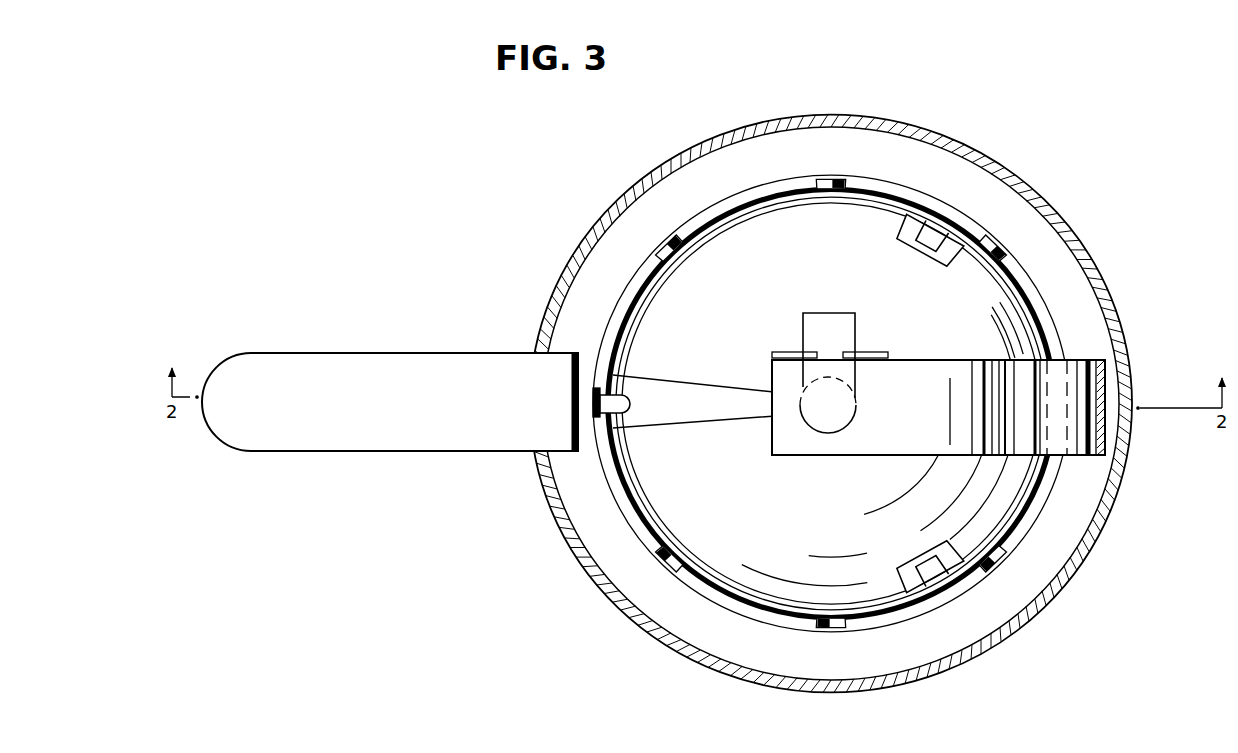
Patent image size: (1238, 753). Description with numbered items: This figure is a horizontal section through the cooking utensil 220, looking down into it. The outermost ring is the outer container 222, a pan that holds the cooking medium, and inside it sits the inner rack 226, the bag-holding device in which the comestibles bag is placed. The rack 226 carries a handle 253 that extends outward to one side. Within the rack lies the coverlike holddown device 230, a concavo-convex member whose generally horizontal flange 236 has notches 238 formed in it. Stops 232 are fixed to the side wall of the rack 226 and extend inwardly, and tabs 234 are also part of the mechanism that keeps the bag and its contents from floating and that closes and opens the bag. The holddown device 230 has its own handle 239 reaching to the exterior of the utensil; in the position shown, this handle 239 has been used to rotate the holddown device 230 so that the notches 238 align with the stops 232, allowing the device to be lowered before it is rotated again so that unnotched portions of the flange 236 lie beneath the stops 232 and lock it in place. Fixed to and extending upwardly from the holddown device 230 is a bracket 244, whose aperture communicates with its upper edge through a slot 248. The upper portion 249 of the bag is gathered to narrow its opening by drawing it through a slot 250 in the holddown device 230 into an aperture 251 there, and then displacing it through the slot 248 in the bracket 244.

The cooking utensil 220 is at (650, 162).
The outer container 222 is at (546, 305).
The inner rack 226 is at (626, 271).
The holddown device 230 is at (628, 478).
The stops 232 is at (633, 404).
The tabs 234 is at (672, 232).
The flange 236 is at (753, 600).
The notches 238 is at (948, 267).
The handle 239 is at (1100, 428).
The bracket 244 is at (769, 347).
The slot 248 is at (843, 354).
The upper portion of bag 249 is at (806, 325).
The slot in holddown device 250 is at (718, 386).
The aperture in holddown device 251 is at (853, 418).
The handle 253 is at (350, 358).